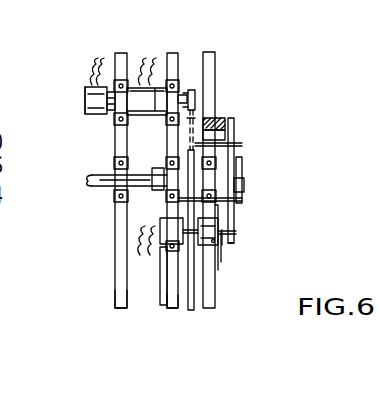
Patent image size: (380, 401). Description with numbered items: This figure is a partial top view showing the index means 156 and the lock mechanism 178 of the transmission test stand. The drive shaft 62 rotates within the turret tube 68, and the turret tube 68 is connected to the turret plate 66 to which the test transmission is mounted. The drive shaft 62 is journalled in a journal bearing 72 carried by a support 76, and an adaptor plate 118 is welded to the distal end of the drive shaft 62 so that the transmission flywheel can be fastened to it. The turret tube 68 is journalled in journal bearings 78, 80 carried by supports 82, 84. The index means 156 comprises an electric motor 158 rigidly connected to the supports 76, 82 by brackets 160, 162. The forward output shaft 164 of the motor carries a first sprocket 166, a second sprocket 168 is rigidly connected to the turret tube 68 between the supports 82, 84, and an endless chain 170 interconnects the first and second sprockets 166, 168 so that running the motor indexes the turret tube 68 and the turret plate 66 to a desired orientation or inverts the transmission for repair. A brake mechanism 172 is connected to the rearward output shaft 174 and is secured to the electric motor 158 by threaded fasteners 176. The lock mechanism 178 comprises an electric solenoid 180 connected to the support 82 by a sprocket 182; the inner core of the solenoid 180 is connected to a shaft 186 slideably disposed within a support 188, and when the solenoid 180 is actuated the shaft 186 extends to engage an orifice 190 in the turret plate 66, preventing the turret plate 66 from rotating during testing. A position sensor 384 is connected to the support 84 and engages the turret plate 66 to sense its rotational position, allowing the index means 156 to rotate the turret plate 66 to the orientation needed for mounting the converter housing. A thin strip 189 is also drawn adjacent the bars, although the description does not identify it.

The index means 156 is at (73, 69).
The rearward output shaft 174 is at (110, 88).
The bracket 160 is at (123, 72).
The bracket 162 is at (178, 60).
The forward output shaft 164 is at (190, 95).
The support 84 is at (213, 58).
The first sprocket 166 is at (196, 97).
The endless chain 170 is at (193, 118).
The position sensor 384 is at (222, 127).
The turret plate 66 is at (235, 125).
The second sprocket 168 is at (222, 144).
The journal bearing 80 is at (222, 172).
The adaptor plate 118 is at (240, 196).
The orifice 190 is at (233, 228).
The shaft 186 is at (232, 232).
The support 188 is at (222, 237).
The lock mechanism 178 is at (248, 304).
The brake mechanism 172 is at (85, 102).
The threaded fasteners 176 is at (110, 113).
The drive shaft 62 is at (94, 174).
The journal bearing 72 is at (118, 184).
The electric motor 158 is at (140, 103).
The turret tube 68 is at (160, 177).
The journal bearing 78 is at (170, 192).
The electric solenoid 180 is at (163, 248).
The sprocket 182 is at (165, 281).
The support 76 is at (116, 298).
The support 82 is at (167, 308).
The strip 189 is at (192, 240).